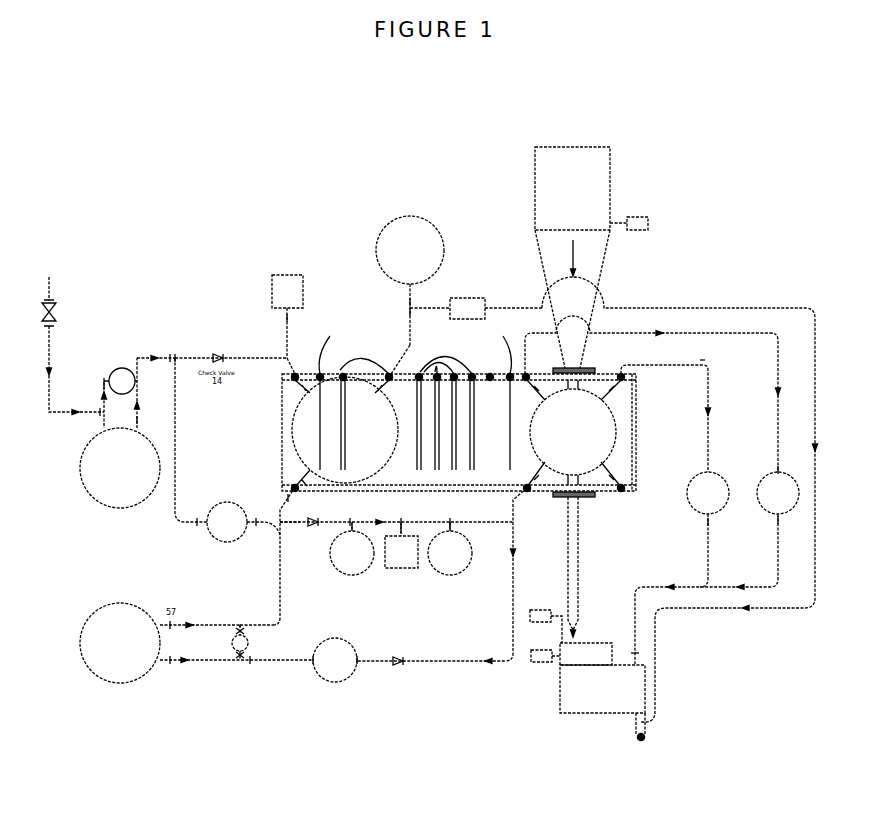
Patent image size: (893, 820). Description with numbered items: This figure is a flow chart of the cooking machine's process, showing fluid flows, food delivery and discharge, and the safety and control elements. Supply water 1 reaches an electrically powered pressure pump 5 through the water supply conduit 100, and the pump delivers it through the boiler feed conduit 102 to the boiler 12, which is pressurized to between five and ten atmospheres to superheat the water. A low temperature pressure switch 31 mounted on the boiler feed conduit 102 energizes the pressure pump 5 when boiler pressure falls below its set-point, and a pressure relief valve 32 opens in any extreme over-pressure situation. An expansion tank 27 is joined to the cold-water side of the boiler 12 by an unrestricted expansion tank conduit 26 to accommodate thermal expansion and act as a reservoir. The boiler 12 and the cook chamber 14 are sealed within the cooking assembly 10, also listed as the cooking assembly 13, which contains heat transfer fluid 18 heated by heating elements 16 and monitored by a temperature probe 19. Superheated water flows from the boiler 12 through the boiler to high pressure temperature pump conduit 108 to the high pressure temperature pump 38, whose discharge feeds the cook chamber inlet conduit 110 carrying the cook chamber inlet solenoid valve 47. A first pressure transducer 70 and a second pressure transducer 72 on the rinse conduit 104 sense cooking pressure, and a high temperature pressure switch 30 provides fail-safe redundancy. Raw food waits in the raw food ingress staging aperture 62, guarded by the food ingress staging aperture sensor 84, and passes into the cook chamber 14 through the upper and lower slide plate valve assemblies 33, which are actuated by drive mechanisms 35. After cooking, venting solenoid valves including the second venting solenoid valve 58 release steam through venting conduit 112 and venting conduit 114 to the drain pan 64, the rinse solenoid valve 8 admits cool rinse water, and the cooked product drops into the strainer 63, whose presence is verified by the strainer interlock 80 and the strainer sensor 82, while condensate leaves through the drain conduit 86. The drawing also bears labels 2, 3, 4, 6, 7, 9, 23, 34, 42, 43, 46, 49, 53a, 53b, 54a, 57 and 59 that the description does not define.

The supply water 1 is at (66, 276).
The manual water shutoff valve 2 is at (83, 309).
The pressure pump 3 is at (105, 462).
The pump inlet line 4 is at (103, 403).
The pressure pump 5 is at (134, 393).
The pressure relief 6 is at (120, 374).
The valve 7 is at (157, 353).
The rinse solenoid valve 8 is at (227, 461).
The check valve 9 is at (311, 523).
The cooking assembly 10 is at (459, 438).
The boiler 12 is at (345, 432).
The cooking assembly 13 is at (443, 432).
The cook chamber 14 is at (573, 432).
The heating elements 16 is at (413, 411).
The heat transfer fluid 18 is at (323, 395).
The temperature probe 19 is at (502, 394).
The vent line 23 is at (704, 589).
The expansion tank conduit 26 is at (399, 357).
The expansion tank 27 is at (410, 280).
The high temperature pressure switch 30 is at (401, 556).
The low temperature pressure switch 31 is at (281, 316).
The pressure relief valve 32 is at (476, 295).
The slide plate valve assembly 33 is at (773, 465).
The pump line 34 is at (265, 627).
The slide plate valve assembly drive mechanism 35 is at (238, 621).
The high pressure temperature pump 38 is at (120, 643).
The line 42 is at (242, 666).
The pressure relief 43 is at (256, 642).
The pump outlet line 46 is at (236, 666).
The cook chamber inlet solenoid valve 47 is at (343, 679).
The check valve 49 is at (396, 660).
The cook chamber ingress slide plate 53a is at (598, 372).
The cook chamber discharge slide plate 53b is at (597, 549).
The slide plate valve assembly 54a is at (709, 356).
The line 57 is at (714, 523).
The second venting solenoid valve 58 is at (715, 516).
The venting solenoid valve 2 59 is at (784, 505).
The raw food ingress staging aperture 62 is at (542, 665).
The strainer 63 is at (586, 654).
The drain pan 64 is at (602, 689).
The first pressure transducer 70 is at (348, 549).
The second pressure transducer 72 is at (454, 549).
The strainer interlock 80 is at (545, 617).
The strainer sensor 82 is at (572, 257).
The food ingress staging aperture sensor 84 is at (647, 234).
The drain conduit 86 is at (639, 733).
The water supply conduit 100 is at (65, 371).
The boiler feed conduit 102 is at (268, 360).
The rinse conduit 1 104 is at (290, 532).
The boiler to high pressure temperature pump conduit 108 is at (385, 556).
The cook chamber inlet conduit 110 is at (596, 499).
The venting conduit 1 112 is at (675, 418).
The venting conduit 2 114 is at (661, 394).